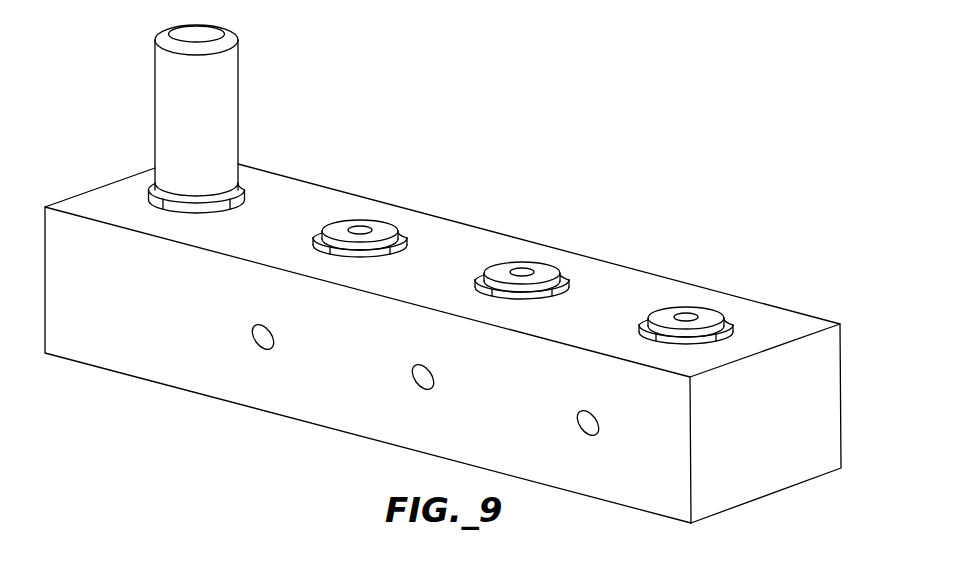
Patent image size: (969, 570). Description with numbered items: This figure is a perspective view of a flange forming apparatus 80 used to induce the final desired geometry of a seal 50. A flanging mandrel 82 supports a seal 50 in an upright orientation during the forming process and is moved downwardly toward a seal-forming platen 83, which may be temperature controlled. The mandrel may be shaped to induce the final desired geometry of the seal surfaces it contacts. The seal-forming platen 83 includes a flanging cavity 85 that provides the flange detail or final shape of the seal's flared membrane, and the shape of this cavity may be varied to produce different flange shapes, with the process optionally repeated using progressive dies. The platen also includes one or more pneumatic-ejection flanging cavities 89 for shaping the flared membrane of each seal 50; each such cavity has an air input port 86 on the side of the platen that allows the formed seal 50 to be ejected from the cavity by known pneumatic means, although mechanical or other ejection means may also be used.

The flange forming apparatus 80 is at (543, 90).
The flanging mandrel 82 is at (175, 95).
The seal-forming platen 83 is at (463, 245).
The seal 50 is at (243, 200).
The flanging cavity 85 is at (158, 210).
The air input port 86 is at (257, 335).
The pneumatic-ejection flanging cavity 89 is at (725, 328).